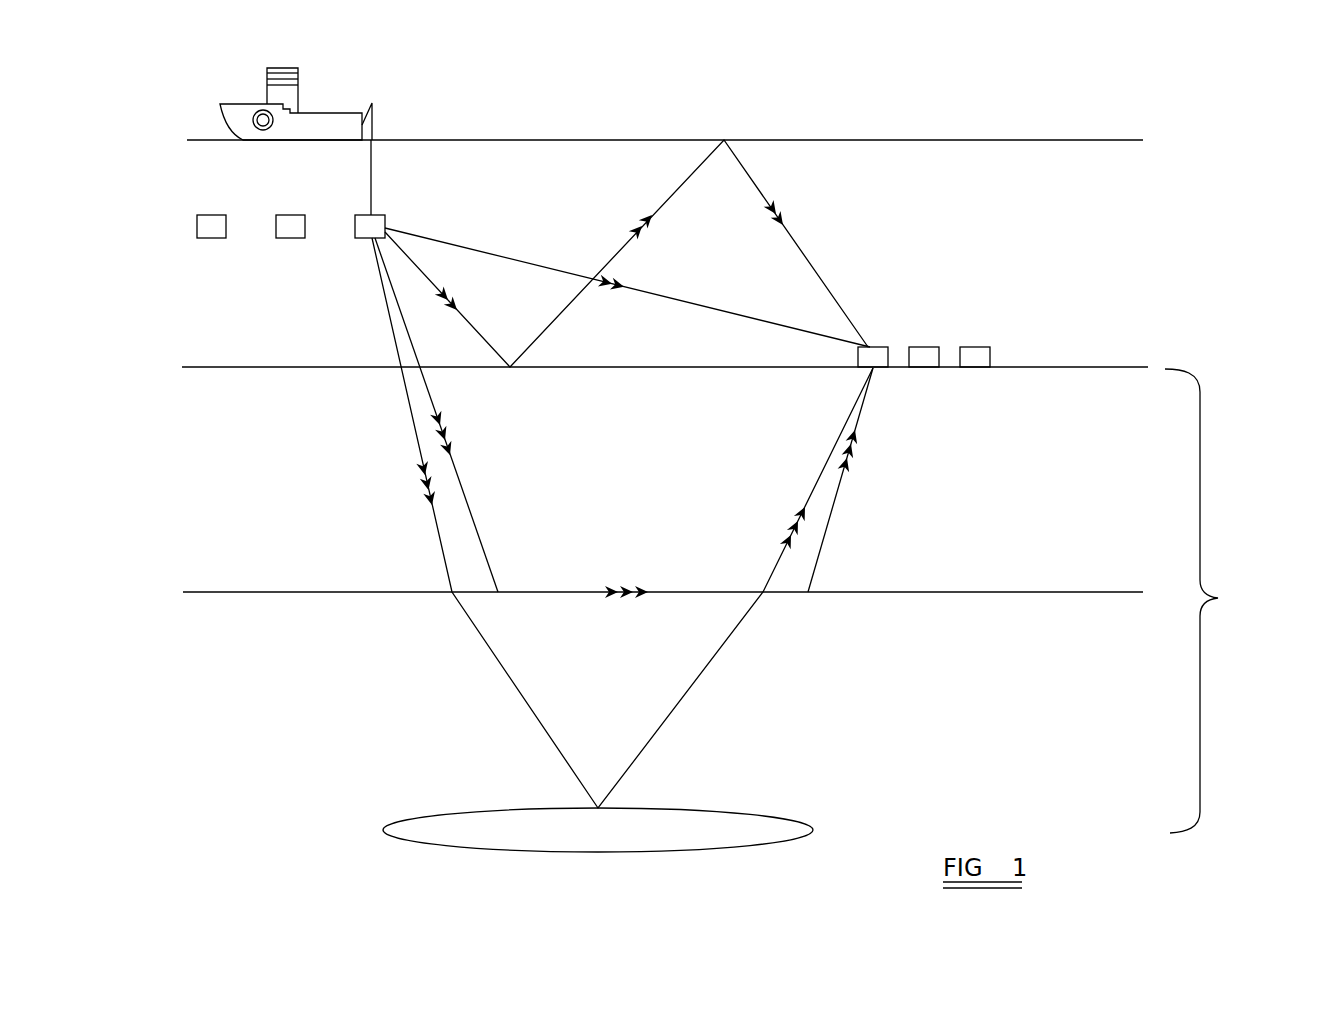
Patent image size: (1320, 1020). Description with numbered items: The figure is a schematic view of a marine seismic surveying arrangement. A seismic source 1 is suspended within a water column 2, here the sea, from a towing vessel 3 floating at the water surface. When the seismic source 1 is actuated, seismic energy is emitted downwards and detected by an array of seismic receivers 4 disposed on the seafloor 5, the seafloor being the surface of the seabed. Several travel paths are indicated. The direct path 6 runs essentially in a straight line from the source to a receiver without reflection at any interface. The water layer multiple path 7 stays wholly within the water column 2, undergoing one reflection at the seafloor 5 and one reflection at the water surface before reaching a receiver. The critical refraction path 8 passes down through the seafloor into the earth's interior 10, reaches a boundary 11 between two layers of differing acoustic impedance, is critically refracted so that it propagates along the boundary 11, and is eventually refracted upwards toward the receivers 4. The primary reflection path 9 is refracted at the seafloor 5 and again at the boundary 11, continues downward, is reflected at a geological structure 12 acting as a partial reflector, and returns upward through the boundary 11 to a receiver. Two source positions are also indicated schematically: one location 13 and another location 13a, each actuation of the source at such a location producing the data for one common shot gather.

The seismic source 1 is at (362, 240).
The water column 2 is at (650, 171).
The towing vessel 3 is at (300, 90).
The seismic receivers 4 is at (975, 347).
The seafloor 5 is at (1148, 367).
The direct path 6 is at (495, 253).
The water layer multiple path 7 is at (565, 308).
The critical refraction path 8 is at (473, 518).
The primary reflection path 9 is at (527, 697).
The earth's interior 10 is at (1218, 601).
The boundary 11 is at (983, 595).
The geological structure 12 is at (775, 817).
The source location 13 is at (290, 240).
The source location 13a is at (211, 240).